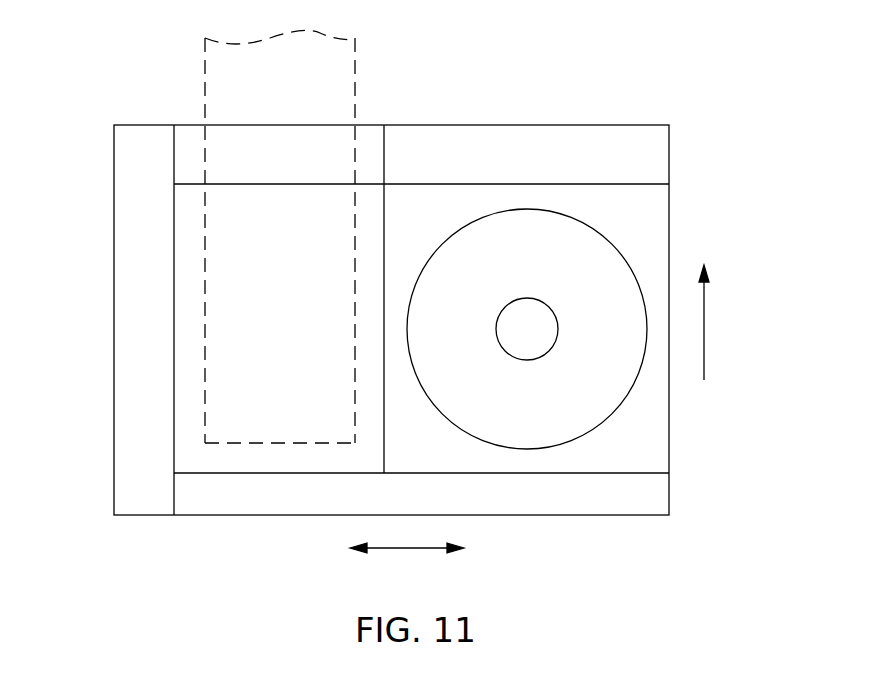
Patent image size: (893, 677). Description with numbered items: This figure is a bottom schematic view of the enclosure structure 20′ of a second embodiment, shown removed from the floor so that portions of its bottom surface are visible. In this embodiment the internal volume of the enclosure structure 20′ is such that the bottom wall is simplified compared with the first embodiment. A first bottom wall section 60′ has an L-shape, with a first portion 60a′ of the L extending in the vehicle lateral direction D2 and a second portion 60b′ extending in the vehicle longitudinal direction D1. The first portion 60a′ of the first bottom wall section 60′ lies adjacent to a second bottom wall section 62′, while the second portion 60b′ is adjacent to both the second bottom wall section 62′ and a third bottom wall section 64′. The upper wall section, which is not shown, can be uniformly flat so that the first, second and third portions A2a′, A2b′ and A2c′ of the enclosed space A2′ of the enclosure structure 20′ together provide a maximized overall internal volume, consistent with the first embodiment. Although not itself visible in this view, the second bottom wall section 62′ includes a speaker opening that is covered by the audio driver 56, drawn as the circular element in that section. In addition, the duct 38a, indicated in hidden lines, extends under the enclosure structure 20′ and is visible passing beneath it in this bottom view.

The enclosure structure 20′ is at (635, 78).
The duct 38a is at (357, 78).
The audio driver 56 is at (588, 392).
The first bottom wall section 60′ is at (529, 155).
The first portion 60a′ is at (597, 158).
The second portion 60b′ is at (141, 293).
The second bottom wall section 62′ is at (645, 246).
The third bottom wall section 64′ is at (238, 495).
The enclosed space A2′ is at (425, 216).
The first portion of the enclosed space A2a′ is at (476, 160).
The second portion of the enclosed space A2b′ is at (637, 204).
The third portion of the enclosed space A2c′ is at (565, 497).
The vehicle longitudinal direction D1 is at (705, 325).
The vehicle lateral direction D2 is at (412, 548).